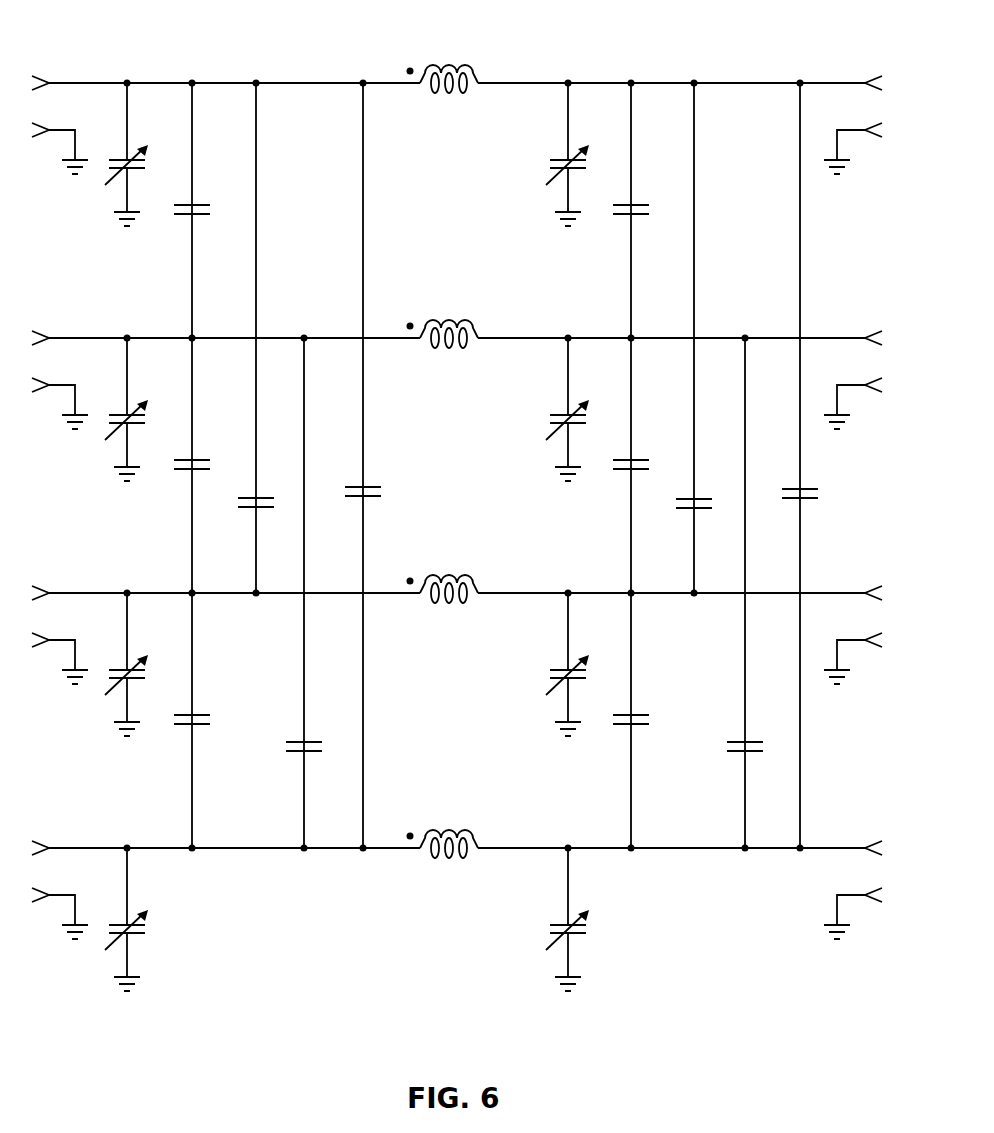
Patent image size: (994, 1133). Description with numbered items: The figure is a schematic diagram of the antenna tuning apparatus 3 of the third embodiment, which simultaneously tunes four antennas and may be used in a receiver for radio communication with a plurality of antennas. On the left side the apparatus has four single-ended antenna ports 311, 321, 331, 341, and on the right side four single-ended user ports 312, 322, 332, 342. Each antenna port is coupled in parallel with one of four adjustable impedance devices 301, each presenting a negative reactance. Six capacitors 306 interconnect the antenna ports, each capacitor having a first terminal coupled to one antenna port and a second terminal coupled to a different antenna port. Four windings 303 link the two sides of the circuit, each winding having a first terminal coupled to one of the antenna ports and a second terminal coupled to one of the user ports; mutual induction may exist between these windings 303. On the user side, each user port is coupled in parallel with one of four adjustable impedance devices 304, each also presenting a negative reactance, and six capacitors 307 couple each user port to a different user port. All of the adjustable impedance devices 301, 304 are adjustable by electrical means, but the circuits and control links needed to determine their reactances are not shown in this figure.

The antenna tuning apparatus 3 is at (773, 1008).
The adjustable impedance device 301 is at (111, 545).
The winding 303 is at (443, 431).
The adjustable impedance device 304 is at (553, 550).
The capacitor 306 is at (262, 466).
The capacitor 307 is at (700, 466).
The antenna port 311 is at (52, 52).
The antenna port 321 is at (48, 305).
The antenna port 331 is at (48, 561).
The antenna port 341 is at (48, 818).
The user port 312 is at (863, 52).
The user port 322 is at (863, 305).
The user port 332 is at (863, 561).
The user port 342 is at (863, 818).